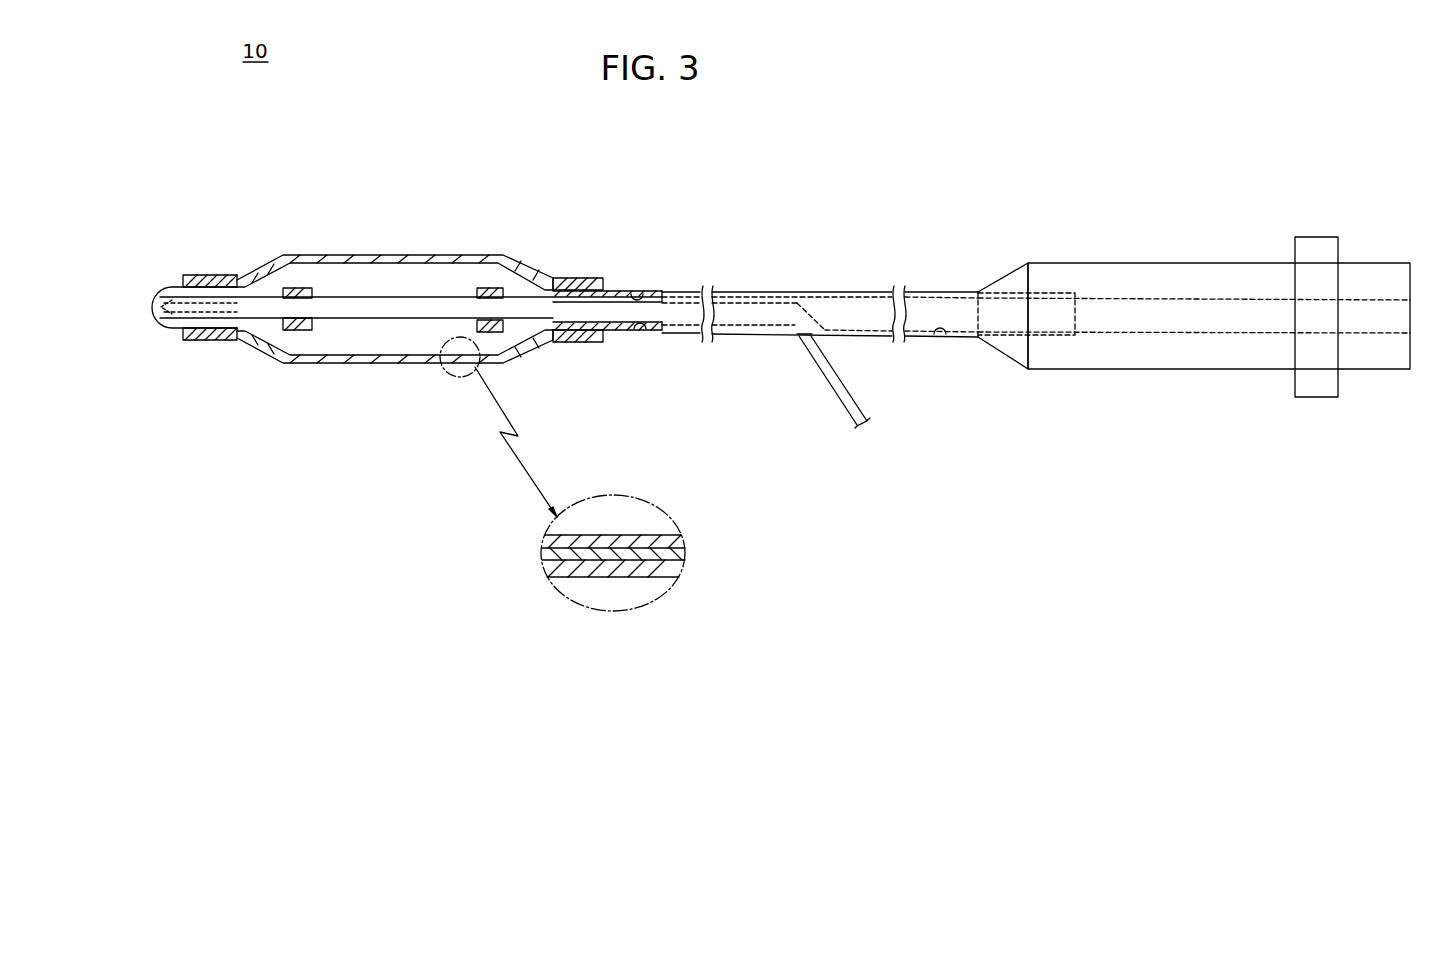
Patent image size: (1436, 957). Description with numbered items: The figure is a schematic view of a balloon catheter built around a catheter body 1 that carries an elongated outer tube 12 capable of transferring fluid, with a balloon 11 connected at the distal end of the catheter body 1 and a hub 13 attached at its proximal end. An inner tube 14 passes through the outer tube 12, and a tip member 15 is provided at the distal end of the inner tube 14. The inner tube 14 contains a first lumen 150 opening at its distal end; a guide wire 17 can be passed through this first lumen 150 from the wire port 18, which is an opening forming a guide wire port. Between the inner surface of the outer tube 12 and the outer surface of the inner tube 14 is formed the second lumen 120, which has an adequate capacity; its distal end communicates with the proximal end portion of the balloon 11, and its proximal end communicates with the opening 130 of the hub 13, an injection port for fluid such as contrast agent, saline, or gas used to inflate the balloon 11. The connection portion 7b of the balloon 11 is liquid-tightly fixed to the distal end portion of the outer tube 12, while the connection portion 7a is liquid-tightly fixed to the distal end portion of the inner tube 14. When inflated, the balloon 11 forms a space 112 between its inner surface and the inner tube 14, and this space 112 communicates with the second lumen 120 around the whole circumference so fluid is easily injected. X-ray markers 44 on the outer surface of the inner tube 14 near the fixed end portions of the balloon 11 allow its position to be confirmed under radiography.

The catheter body 1 is at (1007, 273).
The connection portion 7a is at (205, 280).
The connection portion 7b is at (585, 278).
The balloon 11 is at (363, 263).
The outer tube 12 is at (785, 292).
The hub 13 is at (1215, 263).
The inner tube 14 is at (407, 320).
The tip member 15 is at (168, 287).
The guide wire 17 is at (837, 397).
The wire port 18 is at (797, 338).
The X-ray marker 44 is at (293, 288).
The space 112 is at (450, 277).
The second lumen 120 is at (637, 293).
The opening 130 is at (1403, 313).
The first lumen 150 is at (175, 323).